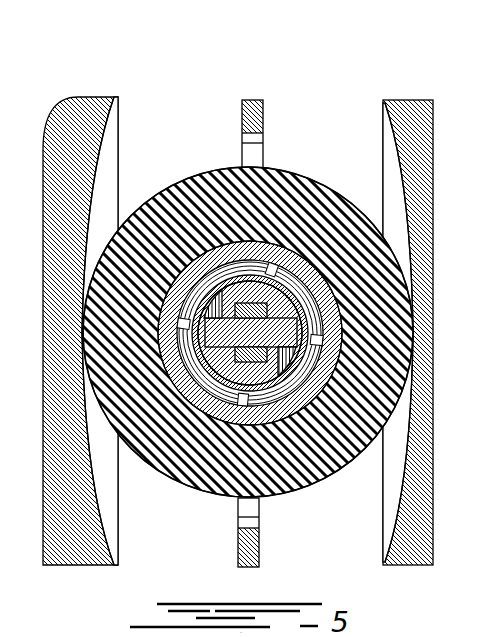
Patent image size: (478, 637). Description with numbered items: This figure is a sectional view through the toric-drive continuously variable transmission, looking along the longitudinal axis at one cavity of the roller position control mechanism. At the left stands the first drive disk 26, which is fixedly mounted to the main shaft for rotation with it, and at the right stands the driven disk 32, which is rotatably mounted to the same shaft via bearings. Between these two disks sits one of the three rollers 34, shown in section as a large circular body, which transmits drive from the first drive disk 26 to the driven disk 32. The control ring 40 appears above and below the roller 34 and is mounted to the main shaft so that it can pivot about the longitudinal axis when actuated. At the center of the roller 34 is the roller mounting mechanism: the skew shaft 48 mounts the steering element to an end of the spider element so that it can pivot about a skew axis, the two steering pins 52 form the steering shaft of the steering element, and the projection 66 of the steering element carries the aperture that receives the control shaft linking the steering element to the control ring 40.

The first drive disk 26 is at (74, 128).
The driven disk 32 is at (417, 112).
The roller 34 is at (183, 210).
The control ring 40 is at (254, 100).
The skew shaft 48 is at (232, 398).
The steering pin 52 is at (298, 385).
The projection 66 is at (272, 268).